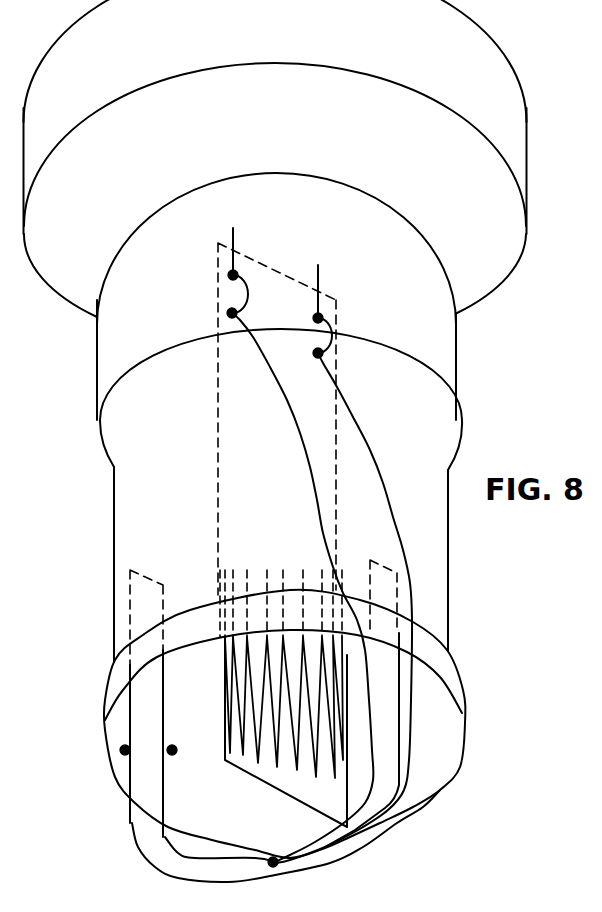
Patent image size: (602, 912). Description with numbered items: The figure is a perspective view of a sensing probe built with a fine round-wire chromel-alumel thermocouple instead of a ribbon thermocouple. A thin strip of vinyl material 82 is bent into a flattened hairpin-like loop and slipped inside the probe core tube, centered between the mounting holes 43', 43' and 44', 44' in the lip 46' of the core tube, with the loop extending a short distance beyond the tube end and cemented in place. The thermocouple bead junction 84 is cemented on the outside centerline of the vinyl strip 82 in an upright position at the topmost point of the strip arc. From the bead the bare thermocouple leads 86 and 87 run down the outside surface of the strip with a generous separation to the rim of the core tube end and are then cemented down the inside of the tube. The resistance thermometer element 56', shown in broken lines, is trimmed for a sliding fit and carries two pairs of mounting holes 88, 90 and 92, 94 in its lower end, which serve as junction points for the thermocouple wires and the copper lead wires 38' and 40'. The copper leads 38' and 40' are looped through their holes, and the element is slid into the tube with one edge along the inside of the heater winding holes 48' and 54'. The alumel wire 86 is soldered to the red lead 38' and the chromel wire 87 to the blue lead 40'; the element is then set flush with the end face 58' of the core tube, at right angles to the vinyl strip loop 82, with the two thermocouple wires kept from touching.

The copper lead wire 38' is at (258, 245).
The copper lead wire 40' is at (342, 287).
The mounting hole 88 is at (232, 275).
The mounting hole 90 is at (232, 313).
The mounting hole 92 is at (317, 318).
The mounting hole 94 is at (318, 353).
The heater winding hole 54' is at (281, 399).
The alumel thermocouple wire 86 is at (317, 500).
The chromel thermocouple wire 87 is at (387, 497).
The heater winding hole 48' is at (261, 535).
The mounting hole 44' is at (409, 703).
The strip of vinyl material 82 is at (130, 677).
The resistance thermometer element 56' is at (262, 674).
The mounting hole 43' is at (139, 763).
The lip 46' is at (311, 724).
The end face 58' is at (290, 725).
The thermocouple bead junction 84 is at (273, 862).